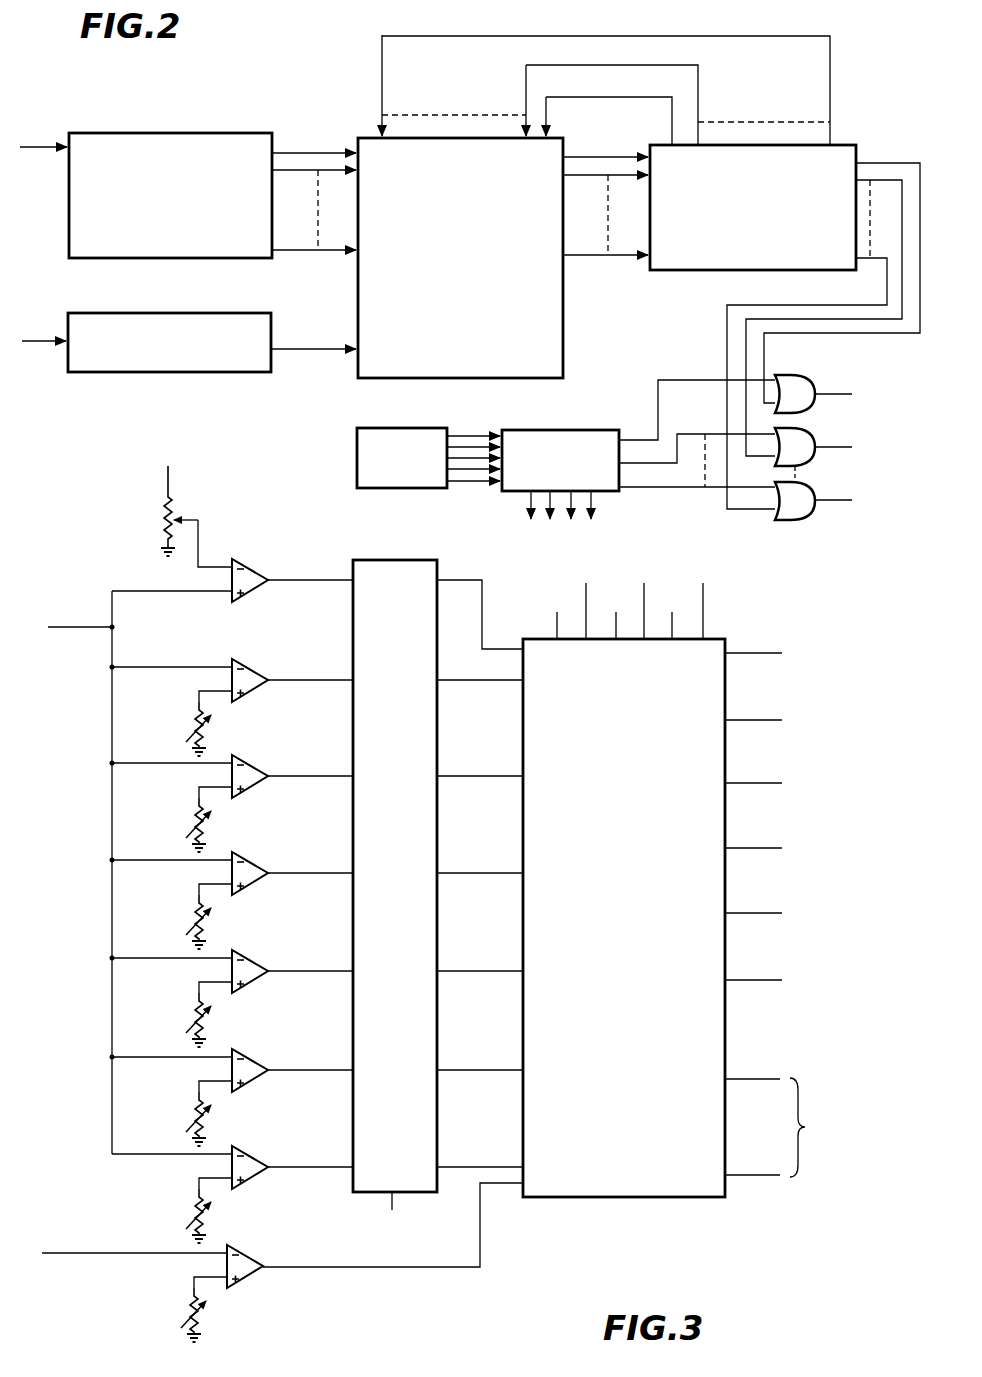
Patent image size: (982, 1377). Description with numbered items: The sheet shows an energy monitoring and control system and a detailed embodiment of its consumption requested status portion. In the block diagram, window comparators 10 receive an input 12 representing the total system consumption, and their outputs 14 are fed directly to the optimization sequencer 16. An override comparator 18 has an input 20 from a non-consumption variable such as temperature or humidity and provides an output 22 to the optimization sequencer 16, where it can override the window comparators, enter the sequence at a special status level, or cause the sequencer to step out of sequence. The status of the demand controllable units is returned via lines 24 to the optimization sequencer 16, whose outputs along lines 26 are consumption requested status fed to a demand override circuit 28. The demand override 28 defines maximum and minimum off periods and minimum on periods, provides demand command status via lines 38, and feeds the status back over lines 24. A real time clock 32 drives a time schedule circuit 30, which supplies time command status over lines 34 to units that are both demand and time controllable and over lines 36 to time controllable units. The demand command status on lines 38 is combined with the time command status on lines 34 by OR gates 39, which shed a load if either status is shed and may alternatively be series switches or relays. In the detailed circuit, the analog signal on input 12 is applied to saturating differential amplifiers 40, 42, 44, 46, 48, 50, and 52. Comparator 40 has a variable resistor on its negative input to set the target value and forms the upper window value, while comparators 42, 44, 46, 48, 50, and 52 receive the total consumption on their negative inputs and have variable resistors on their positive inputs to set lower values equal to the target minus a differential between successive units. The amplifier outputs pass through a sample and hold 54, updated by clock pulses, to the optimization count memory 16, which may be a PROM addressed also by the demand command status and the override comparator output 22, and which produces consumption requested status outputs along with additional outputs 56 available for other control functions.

In FIG. 2, the window comparators 10 is at (164, 132).
In FIG. 3, the window comparators 10 is at (284, 563).
In FIG. 2, the input 12 is at (44, 152).
In FIG. 3, the input 12 is at (79, 625).
In FIG. 2, the output of the window comparators 14 is at (290, 153).
In FIG. 2, the optimization sequencer 16 is at (443, 303).
In FIG. 3, the optimization sequencer 16 is at (610, 977).
In FIG. 2, the override comparator 18 is at (193, 373).
In FIG. 3, the override comparator 18 is at (252, 1274).
In FIG. 2, the input 20 is at (42, 347).
In FIG. 3, the input 20 is at (71, 1255).
In FIG. 2, the output 22 is at (291, 351).
In FIG. 3, the output 22 is at (481, 1241).
In FIG. 2, the lines 24 is at (438, 30).
In FIG. 2, the lines 26 is at (590, 256).
In FIG. 3, the lines 26 is at (757, 638).
In FIG. 2, the demand override circuit 28 is at (744, 255).
In FIG. 2, the time schedule circuit 30 is at (549, 484).
In FIG. 2, the real time clock 32 is at (391, 482).
In FIG. 2, the lines 34 is at (673, 493).
In FIG. 2, the lines 36 is at (602, 510).
In FIG. 2, the lines 38 is at (873, 142).
In FIG. 2, the OR gates 39 is at (829, 516).
In FIG. 3, the comparator 40 is at (257, 588).
In FIG. 3, the comparator 42 is at (257, 688).
In FIG. 3, the comparator 44 is at (257, 784).
In FIG. 3, the comparator 46 is at (257, 881).
In FIG. 3, the comparator 48 is at (257, 979).
In FIG. 3, the comparator 50 is at (257, 1078).
In FIG. 3, the comparator 52 is at (257, 1175).
In FIG. 3, the sample and hold 54 is at (376, 975).
In FIG. 3, the additional outputs 56 is at (777, 1127).